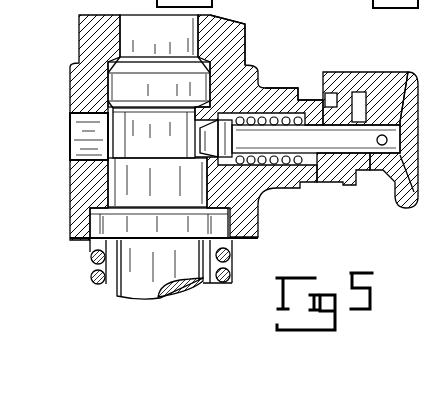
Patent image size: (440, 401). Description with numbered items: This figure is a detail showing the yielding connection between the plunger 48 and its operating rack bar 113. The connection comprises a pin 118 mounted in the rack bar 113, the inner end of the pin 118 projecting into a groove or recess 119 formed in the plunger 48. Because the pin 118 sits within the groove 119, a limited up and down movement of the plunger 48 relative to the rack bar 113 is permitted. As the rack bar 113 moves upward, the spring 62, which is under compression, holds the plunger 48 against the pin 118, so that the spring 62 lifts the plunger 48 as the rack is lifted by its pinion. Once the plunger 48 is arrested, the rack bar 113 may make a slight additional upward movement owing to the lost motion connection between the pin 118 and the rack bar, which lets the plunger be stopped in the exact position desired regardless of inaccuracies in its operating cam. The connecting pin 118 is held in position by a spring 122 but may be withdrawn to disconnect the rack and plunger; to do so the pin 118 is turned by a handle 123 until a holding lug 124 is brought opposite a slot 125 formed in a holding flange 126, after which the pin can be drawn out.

The plunger 48 is at (163, 275).
The spring 62 is at (233, 270).
The rack bar 113 is at (247, 30).
The pin 118 is at (305, 99).
The groove or recess 119 is at (247, 61).
The spring 122 is at (280, 183).
The handle 123 is at (398, 78).
The holding lug 124 is at (329, 92).
The slot 125 is at (353, 95).
The holding flange 126 is at (348, 184).